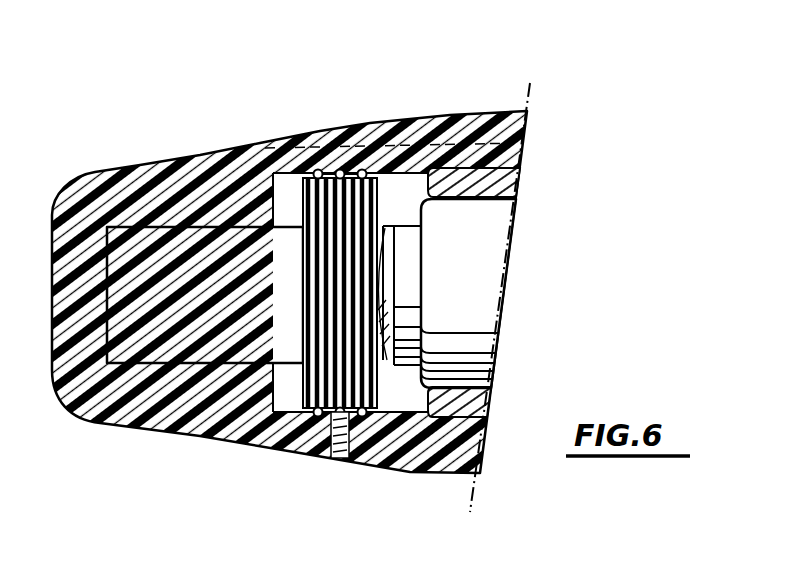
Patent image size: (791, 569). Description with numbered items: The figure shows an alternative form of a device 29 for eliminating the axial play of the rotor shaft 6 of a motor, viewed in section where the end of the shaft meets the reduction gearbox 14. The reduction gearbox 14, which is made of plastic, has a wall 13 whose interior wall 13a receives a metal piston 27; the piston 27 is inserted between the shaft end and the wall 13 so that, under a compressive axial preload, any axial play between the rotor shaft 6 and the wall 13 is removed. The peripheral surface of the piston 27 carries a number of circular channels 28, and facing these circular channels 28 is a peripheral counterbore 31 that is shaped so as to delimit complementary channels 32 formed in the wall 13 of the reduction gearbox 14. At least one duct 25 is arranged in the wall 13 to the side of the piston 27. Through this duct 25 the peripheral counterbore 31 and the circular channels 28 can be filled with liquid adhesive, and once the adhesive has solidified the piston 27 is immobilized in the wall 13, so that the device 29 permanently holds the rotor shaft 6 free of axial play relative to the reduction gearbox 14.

The rotor shaft 6 is at (450, 277).
The wall 13 is at (137, 167).
The interior wall 13a is at (283, 140).
The reduction gearbox 14 is at (506, 100).
The duct 25 is at (336, 452).
The piston 27 is at (210, 437).
The circular channels 28 is at (423, 170).
The device for eliminating axial play 29 is at (388, 382).
The peripheral counterbore 31 is at (305, 452).
The complementary channels 32 is at (363, 170).